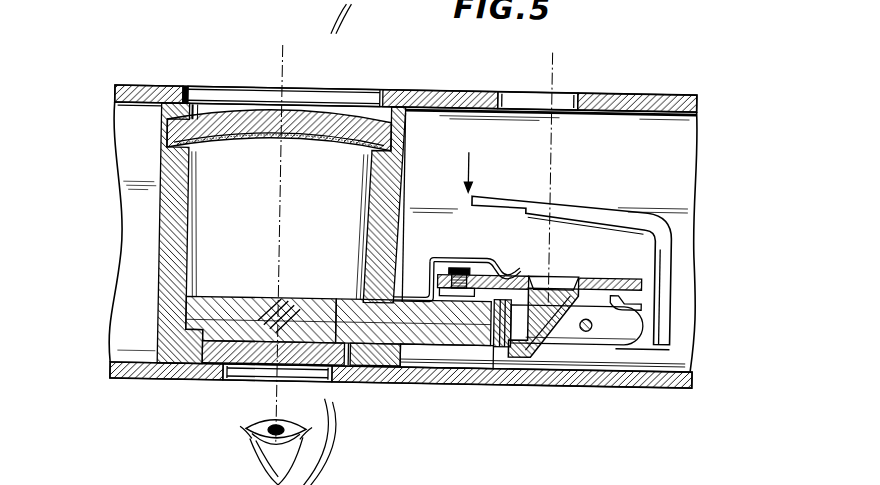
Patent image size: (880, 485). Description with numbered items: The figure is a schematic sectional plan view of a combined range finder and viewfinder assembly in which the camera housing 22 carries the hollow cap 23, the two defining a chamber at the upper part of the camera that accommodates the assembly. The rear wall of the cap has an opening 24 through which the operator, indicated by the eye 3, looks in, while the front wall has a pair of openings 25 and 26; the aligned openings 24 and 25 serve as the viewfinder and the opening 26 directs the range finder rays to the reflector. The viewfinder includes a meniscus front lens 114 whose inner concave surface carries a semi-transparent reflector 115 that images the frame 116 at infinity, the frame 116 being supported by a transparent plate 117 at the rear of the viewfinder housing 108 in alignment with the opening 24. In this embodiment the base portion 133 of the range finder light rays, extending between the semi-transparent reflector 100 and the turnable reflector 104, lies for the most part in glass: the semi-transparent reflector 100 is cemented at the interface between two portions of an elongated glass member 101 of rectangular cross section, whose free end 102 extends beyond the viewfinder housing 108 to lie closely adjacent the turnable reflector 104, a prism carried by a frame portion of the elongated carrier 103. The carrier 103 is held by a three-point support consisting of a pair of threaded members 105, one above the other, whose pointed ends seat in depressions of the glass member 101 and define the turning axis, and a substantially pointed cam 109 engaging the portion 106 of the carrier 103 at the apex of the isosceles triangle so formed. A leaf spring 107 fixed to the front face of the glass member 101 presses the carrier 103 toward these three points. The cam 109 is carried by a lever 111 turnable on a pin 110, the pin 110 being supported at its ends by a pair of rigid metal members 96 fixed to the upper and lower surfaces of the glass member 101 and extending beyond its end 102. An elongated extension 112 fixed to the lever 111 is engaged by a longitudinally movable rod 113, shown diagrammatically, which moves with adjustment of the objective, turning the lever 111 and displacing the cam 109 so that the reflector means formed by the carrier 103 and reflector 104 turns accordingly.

The eye of observer 3 is at (262, 452).
The camera housing 22 is at (697, 186).
The hollow cap 23 is at (697, 95).
The opening 24 is at (320, 380).
The opening 25 is at (362, 98).
The opening 26 is at (566, 93).
The metal members 96 is at (568, 338).
The semi-transparent reflector 100 is at (268, 296).
The elongated glass member 101 is at (322, 296).
The free end 102 is at (496, 348).
The elongated carrier 103 is at (545, 346).
The turnable reflector 104 is at (571, 272).
The members 105 is at (432, 292).
The portion 106 is at (645, 284).
The leaf spring 107 is at (470, 252).
The viewfinder housing 108 is at (162, 185).
The cam 109 is at (630, 298).
The pin 110 is at (597, 318).
The lever 111 is at (662, 333).
The elongated extension 112 is at (602, 203).
The rod 113 is at (474, 151).
The front lens 114 is at (233, 100).
The semi-transparent reflector 115 is at (318, 102).
The frame 116 is at (234, 338).
The transparent plate 117 is at (248, 380).
The base portion 133 is at (405, 358).